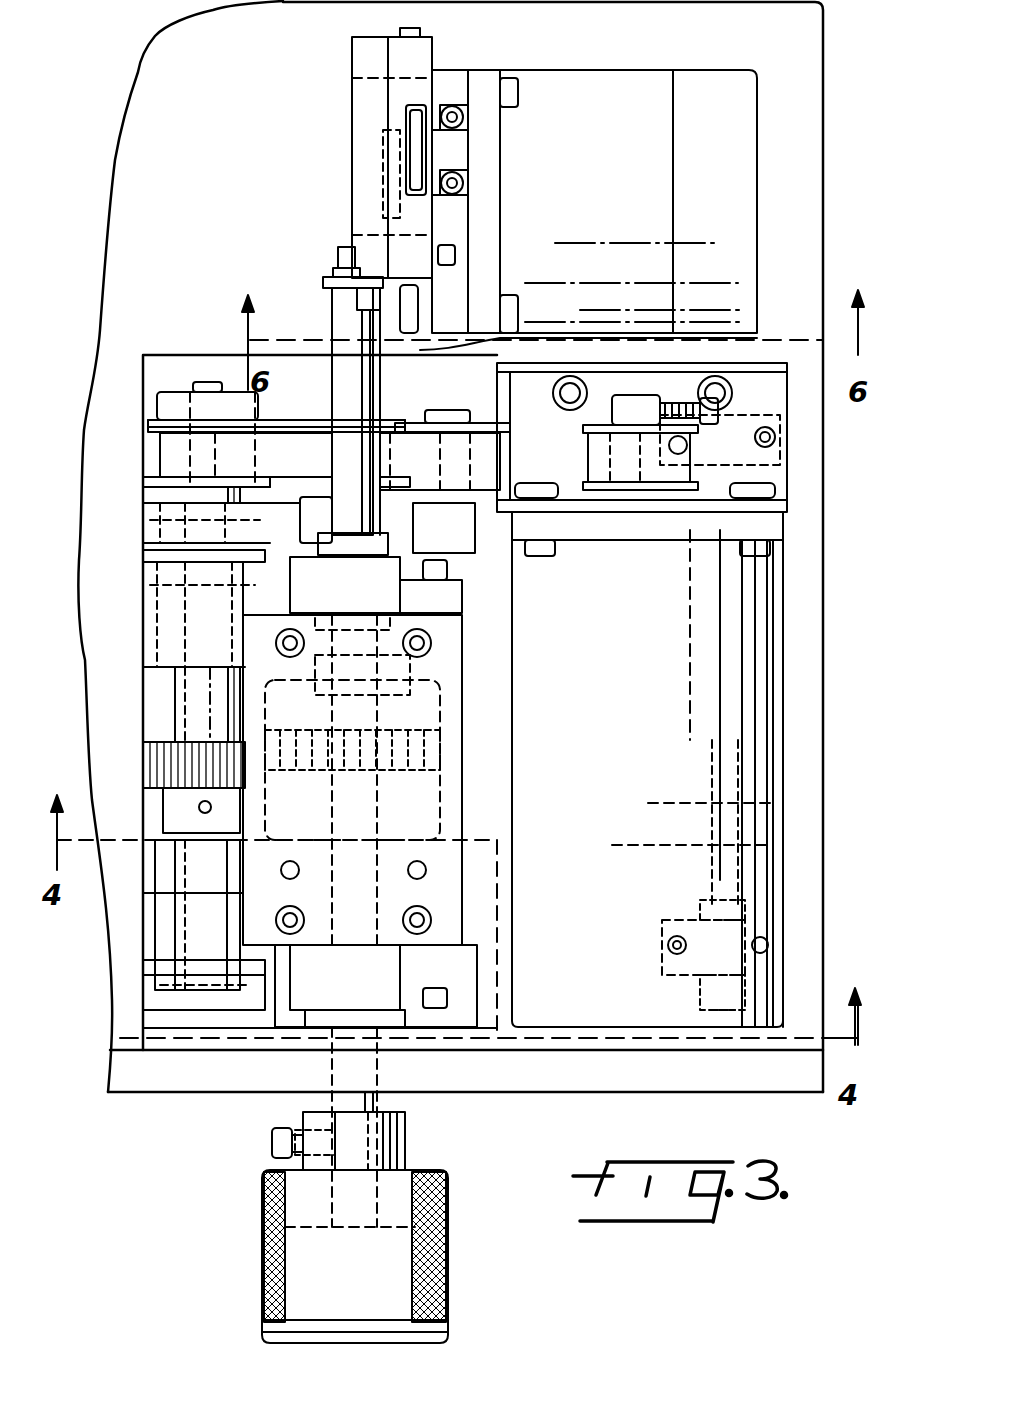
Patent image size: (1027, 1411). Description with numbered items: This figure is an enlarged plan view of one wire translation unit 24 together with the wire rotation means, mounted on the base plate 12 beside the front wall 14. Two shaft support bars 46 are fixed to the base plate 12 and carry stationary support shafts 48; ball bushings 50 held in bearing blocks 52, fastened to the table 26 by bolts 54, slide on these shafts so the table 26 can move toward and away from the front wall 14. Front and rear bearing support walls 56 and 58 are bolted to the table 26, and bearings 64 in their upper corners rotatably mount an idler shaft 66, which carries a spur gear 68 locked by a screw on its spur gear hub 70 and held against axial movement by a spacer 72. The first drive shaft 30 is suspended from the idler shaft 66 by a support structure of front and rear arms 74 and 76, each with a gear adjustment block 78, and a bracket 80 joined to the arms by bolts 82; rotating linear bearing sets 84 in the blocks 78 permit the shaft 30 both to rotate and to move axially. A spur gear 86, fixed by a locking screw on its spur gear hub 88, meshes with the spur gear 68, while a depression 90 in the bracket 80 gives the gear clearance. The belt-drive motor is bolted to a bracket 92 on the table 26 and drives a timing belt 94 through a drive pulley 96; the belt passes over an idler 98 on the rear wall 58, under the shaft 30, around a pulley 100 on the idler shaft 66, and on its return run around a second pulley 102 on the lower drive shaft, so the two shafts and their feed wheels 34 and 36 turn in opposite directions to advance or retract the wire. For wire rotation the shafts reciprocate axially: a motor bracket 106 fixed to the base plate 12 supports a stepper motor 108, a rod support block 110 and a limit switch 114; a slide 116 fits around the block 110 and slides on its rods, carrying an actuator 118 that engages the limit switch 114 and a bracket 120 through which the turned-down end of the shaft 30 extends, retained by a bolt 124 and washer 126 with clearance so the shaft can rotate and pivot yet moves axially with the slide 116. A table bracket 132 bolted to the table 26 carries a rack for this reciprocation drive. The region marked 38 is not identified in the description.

The base plate 12 is at (823, 715).
The front wall 14 is at (728, 1092).
The wire translation unit 24 is at (173, 766).
The table 26 is at (780, 668).
The first drive shaft 30 is at (385, 1105).
The feed wheel 34 is at (263, 1210).
The feed wheel 36 is at (265, 1330).
The motor mount assembly 38 is at (509, 185).
The shaft support bar 46 is at (690, 797).
The support shaft 48 is at (712, 868).
The ball bushing 50 is at (697, 985).
The bearing block 52 is at (790, 425).
The bolt 54 is at (752, 945).
The front bearing support wall 56 is at (143, 1010).
The rear bearing support wall 58 is at (143, 528).
The bearing 64 is at (143, 542).
The idler shaft 66 is at (212, 384).
The spur gear 68 is at (156, 745).
The spur gear hub 70 is at (170, 807).
The spacer 72 is at (240, 700).
The front arm 74 is at (462, 917).
The rear arm 76 is at (143, 640).
The gear adjustment block 78 is at (480, 598).
The bracket 80 is at (455, 828).
The bolt 82 is at (430, 643).
The rotating linear bearing set 84 is at (350, 545).
The spur gear 86 is at (440, 753).
The spur gear hub 88 is at (435, 700).
The depression 90 is at (770, 637).
The bracket 92 is at (785, 503).
The timing belt 94 is at (550, 448).
The drive pulley 96 is at (700, 497).
The idler 98 is at (485, 430).
The pulley 100 is at (157, 420).
The second pulley 102 is at (290, 420).
The motor bracket 106 is at (455, 75).
The stepper motor 108 is at (645, 80).
The rod support block 110 is at (385, 155).
The limit switch 114 is at (468, 120).
The slide 116 is at (360, 52).
The actuator 118 is at (440, 227).
The bracket 120 is at (325, 282).
The bolt 124 is at (346, 250).
The washer 126 is at (335, 268).
The table bracket 132 is at (420, 350).